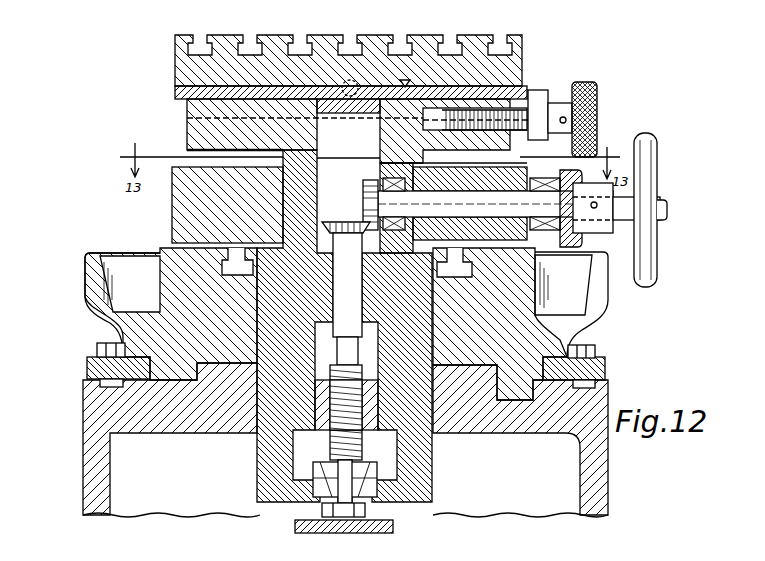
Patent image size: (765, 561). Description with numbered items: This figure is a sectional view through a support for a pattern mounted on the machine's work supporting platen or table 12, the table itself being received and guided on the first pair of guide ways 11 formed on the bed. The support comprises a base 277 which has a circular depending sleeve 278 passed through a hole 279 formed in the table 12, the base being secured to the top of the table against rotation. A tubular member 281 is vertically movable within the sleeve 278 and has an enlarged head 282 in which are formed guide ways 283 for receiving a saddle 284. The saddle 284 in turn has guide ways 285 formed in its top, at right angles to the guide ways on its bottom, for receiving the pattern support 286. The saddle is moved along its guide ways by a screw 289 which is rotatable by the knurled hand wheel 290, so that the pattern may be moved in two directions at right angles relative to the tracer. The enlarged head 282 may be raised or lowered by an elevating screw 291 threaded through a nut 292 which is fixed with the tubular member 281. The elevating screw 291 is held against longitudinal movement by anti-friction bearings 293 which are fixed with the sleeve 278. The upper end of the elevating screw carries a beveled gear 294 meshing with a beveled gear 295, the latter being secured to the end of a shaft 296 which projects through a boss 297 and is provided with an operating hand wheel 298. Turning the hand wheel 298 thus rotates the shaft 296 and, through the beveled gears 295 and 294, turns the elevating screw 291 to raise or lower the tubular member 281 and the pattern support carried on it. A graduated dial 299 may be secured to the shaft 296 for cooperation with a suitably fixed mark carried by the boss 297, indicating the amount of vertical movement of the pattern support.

The guide ways 11 is at (128, 382).
The table 12 is at (83, 282).
The base 277 is at (172, 210).
The sleeve 278 is at (262, 440).
The hole 279 is at (262, 345).
The tubular member 281 is at (290, 220).
The enlarged head 282 is at (187, 130).
The guide ways 283 is at (187, 104).
The saddle 284 is at (518, 100).
The guide ways 285 is at (410, 87).
The pattern support 286 is at (512, 37).
The screw 289 is at (531, 103).
The knurled hand wheel 290 is at (584, 80).
The elevating screw 291 is at (363, 368).
The nut 292 is at (378, 440).
The anti-friction bearings 293 is at (395, 526).
The beveled gear 294 is at (337, 222).
The beveled gear 295 is at (367, 182).
The shaft 296 is at (560, 252).
The boss 297 is at (560, 170).
The operating hand wheel 298 is at (647, 165).
The graduated dial 299 is at (580, 238).